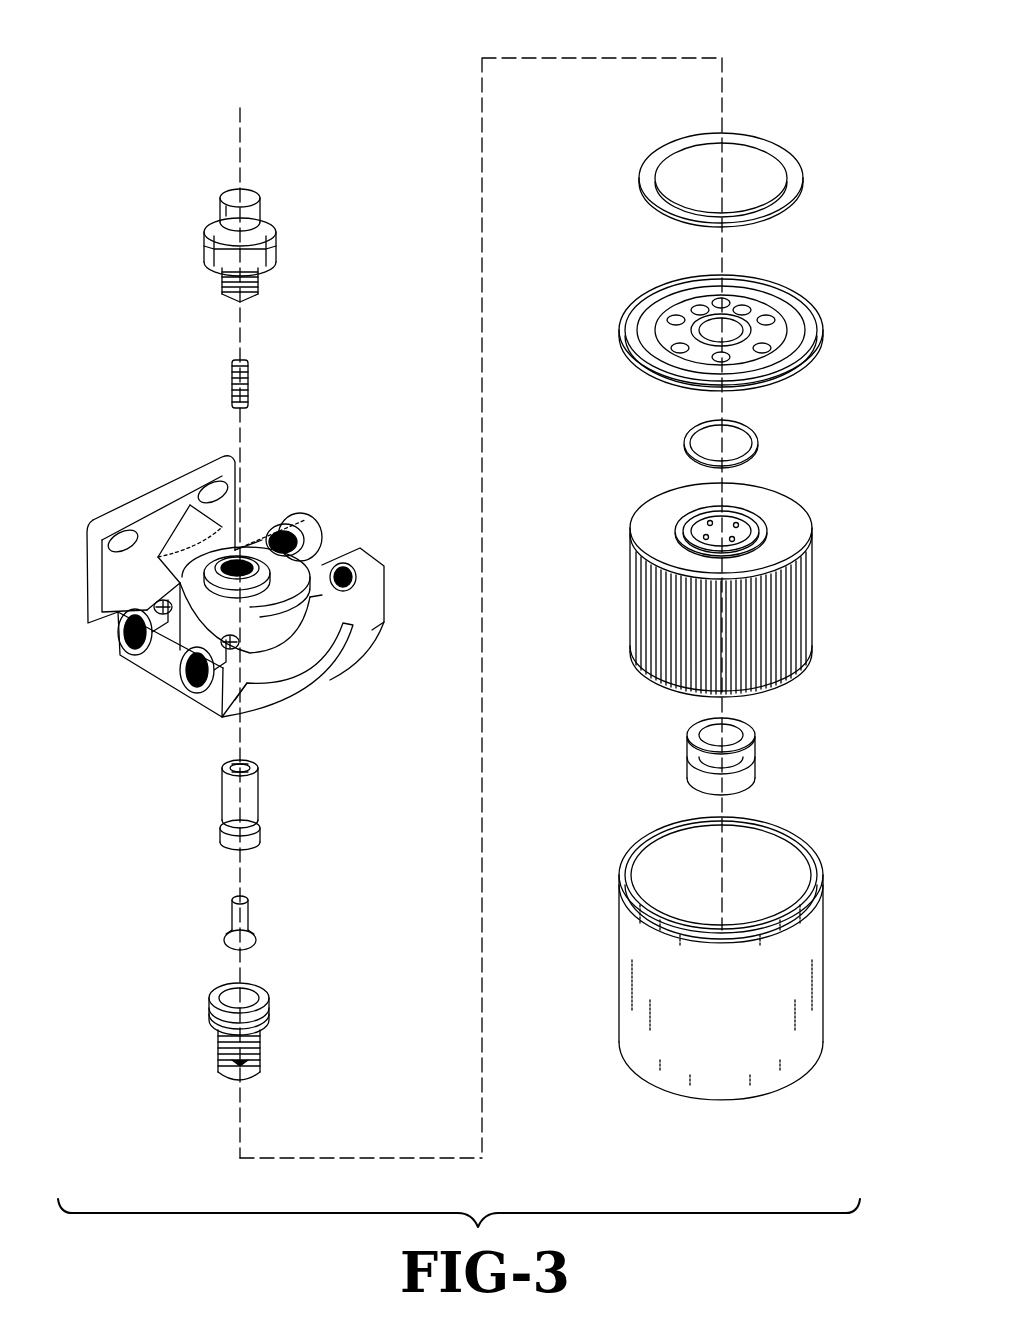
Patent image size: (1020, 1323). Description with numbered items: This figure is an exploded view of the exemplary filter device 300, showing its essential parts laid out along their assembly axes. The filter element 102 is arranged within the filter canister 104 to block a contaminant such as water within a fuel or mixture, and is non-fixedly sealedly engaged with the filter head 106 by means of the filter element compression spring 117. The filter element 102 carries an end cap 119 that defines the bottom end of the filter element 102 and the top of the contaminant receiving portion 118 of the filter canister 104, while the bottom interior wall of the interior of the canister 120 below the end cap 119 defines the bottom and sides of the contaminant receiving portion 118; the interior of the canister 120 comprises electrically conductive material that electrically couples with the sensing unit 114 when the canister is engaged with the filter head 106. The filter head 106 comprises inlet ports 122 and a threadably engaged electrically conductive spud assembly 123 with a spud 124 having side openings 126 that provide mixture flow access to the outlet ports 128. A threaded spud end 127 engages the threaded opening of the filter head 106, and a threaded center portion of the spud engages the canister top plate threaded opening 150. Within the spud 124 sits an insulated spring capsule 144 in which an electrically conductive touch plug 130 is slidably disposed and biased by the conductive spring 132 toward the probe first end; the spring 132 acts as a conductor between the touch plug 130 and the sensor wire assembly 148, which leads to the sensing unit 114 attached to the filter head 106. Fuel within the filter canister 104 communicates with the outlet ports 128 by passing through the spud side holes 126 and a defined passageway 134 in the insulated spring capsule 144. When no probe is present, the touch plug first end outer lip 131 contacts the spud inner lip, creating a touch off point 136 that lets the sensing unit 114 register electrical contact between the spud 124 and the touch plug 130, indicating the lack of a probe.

The exemplary filter device (exploded view) 300 is at (167, 118).
The filter element 102 is at (732, 595).
The filter canister 104 is at (721, 949).
The filter head 106 is at (214, 546).
The sensing unit 114 is at (204, 239).
The filter element compression spring 117 is at (747, 760).
The contaminant receiving portion 118 is at (686, 868).
The end cap 119 is at (771, 502).
The interior of the canister 120 is at (784, 864).
The inlet ports 122 is at (185, 674).
The spud assembly 123 is at (236, 560).
The spud 124 is at (249, 1041).
The side openings 126 is at (226, 1058).
The threaded spud end 127 is at (214, 1012).
The outlet ports 128 is at (310, 522).
The touch plug 130 is at (292, 923).
The touch plug first end outer lip 131 is at (256, 942).
The conductive spring 132 is at (248, 380).
The passageway 134 is at (256, 768).
The touch off point 136 is at (234, 842).
The insulated spring capsule 144 is at (245, 815).
The sensor wire assembly 148 is at (262, 296).
The canister top plate threaded opening 150 is at (732, 322).